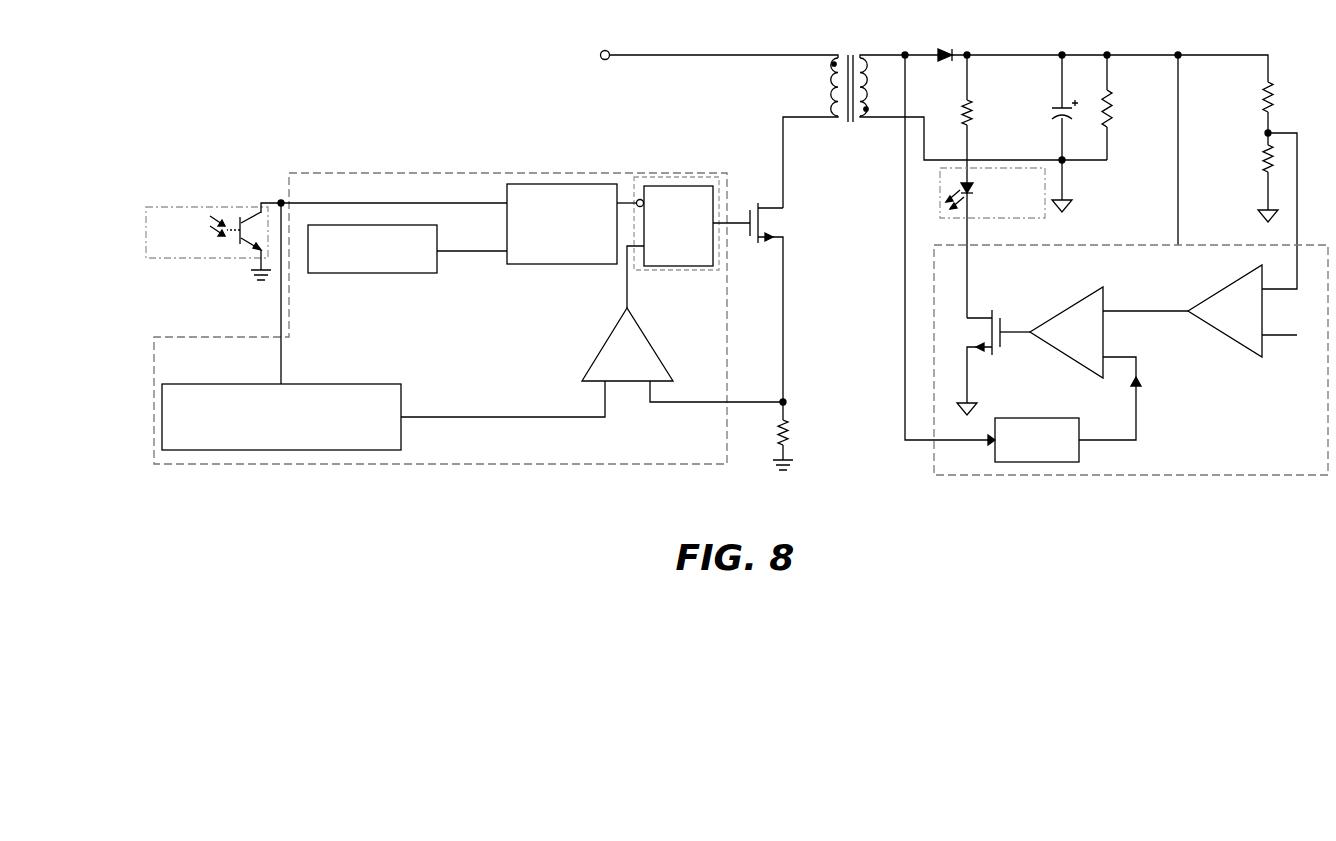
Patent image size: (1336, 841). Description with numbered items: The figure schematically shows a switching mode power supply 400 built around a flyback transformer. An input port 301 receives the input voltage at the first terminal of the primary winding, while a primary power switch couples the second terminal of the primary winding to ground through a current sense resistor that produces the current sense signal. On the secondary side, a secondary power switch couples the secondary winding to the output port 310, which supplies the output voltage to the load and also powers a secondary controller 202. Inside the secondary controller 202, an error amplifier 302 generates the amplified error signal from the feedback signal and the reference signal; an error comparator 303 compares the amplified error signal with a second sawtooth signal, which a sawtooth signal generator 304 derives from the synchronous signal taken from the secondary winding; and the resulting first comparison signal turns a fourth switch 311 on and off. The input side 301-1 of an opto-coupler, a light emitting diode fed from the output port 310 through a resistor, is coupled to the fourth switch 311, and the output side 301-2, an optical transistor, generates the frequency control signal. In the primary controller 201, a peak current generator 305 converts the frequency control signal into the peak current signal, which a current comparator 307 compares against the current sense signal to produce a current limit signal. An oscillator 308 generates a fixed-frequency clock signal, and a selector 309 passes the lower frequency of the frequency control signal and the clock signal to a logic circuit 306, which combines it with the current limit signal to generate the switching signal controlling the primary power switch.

The switching mode power supply 400 is at (325, 98).
The input port 301 is at (672, 56).
The input side of the coupled device 301-1 is at (992, 193).
The output side of the coupled device 301-2 is at (213, 241).
The primary controller 201 is at (468, 318).
The secondary controller 202 is at (1109, 265).
The peak current generator 305 is at (281, 417).
The oscillator 308 is at (408, 275).
The selector 309 is at (582, 266).
The logic circuit 306 is at (680, 270).
The current comparator 307 is at (627, 344).
The error amplifier 302 is at (1225, 311).
The error comparator 303 is at (1066, 332).
The sawtooth signal generator 304 is at (1037, 440).
The output port 310 is at (1134, 138).
The fourth switch 311 is at (985, 362).